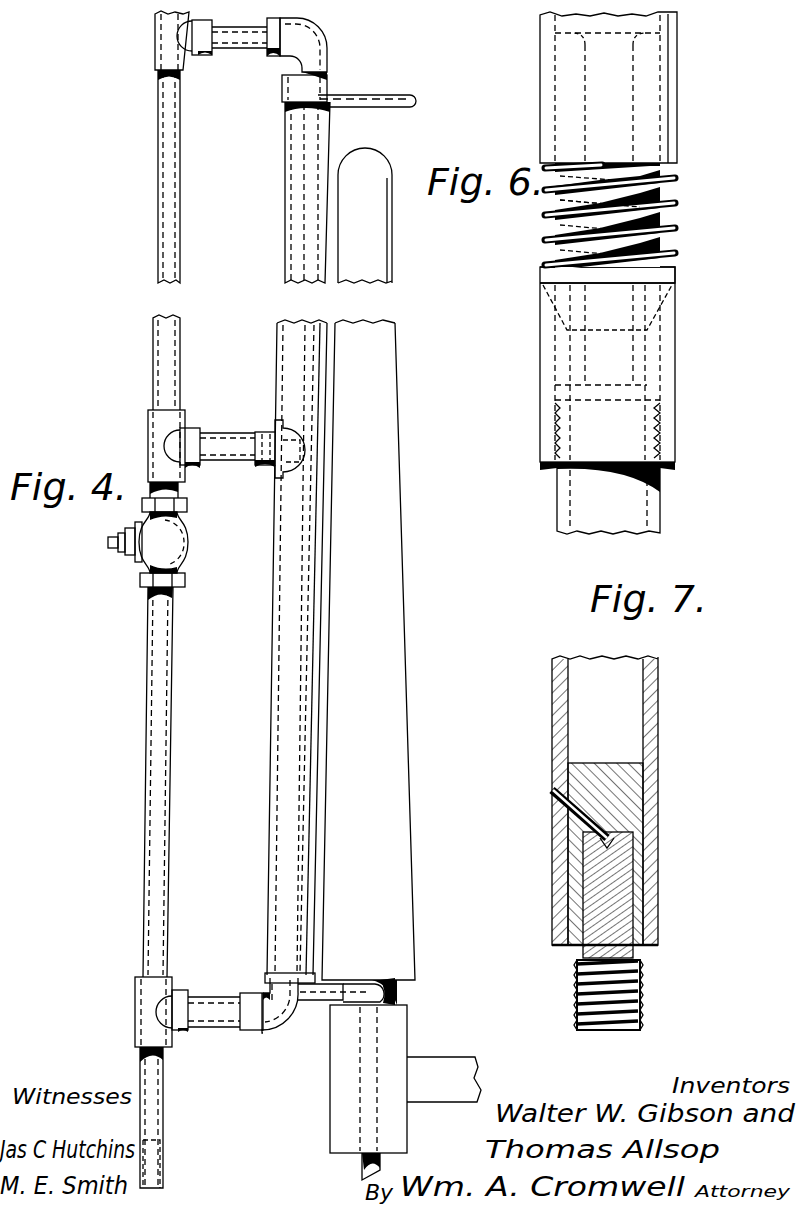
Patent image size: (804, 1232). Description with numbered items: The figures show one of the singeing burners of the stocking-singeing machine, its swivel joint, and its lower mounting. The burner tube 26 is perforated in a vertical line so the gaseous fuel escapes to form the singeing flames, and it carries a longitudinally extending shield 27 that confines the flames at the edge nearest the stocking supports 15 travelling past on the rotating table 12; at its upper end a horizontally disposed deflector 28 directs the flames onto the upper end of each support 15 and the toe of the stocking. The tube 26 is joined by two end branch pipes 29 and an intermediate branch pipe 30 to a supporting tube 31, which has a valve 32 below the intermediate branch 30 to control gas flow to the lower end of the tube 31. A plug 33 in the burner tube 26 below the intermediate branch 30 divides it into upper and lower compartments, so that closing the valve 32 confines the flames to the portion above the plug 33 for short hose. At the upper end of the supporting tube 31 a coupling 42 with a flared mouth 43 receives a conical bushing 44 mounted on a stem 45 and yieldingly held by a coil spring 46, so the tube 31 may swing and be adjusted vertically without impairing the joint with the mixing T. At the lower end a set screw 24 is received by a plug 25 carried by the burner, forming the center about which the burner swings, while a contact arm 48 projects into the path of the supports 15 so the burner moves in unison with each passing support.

In FIG. 4, the table 12 is at (444, 1066).
In FIG. 4, the stocking support 15 is at (368, 662).
In FIG. 7, the set screw 24 is at (642, 984).
In FIG. 7, the plug 25 is at (633, 797).
In FIG. 4, the burner tube 26 is at (276, 662).
In FIG. 4, the shield 27 is at (310, 738).
In FIG. 4, the deflector 28 is at (386, 106).
In FIG. 4, the end branch pipe 29 is at (252, 42).
In FIG. 4, the intermediate branch pipe 30 is at (240, 428).
In FIG. 4, the supporting tube 31 is at (162, 330).
In FIG. 6, the supporting tube 31 is at (608, 498).
In FIG. 7, the supporting tube 31 is at (605, 800).
In FIG. 4, the valve 32 is at (178, 546).
In FIG. 4, the plug 33 is at (287, 477).
In FIG. 6, the coupling 42 is at (540, 362).
In FIG. 6, the flared mouth 43 is at (553, 302).
In FIG. 6, the conical bushing 44 is at (665, 278).
In FIG. 6, the stem 45 is at (558, 225).
In FIG. 6, the coil spring 46 is at (670, 207).
In FIG. 4, the contact arm 48 is at (322, 1003).